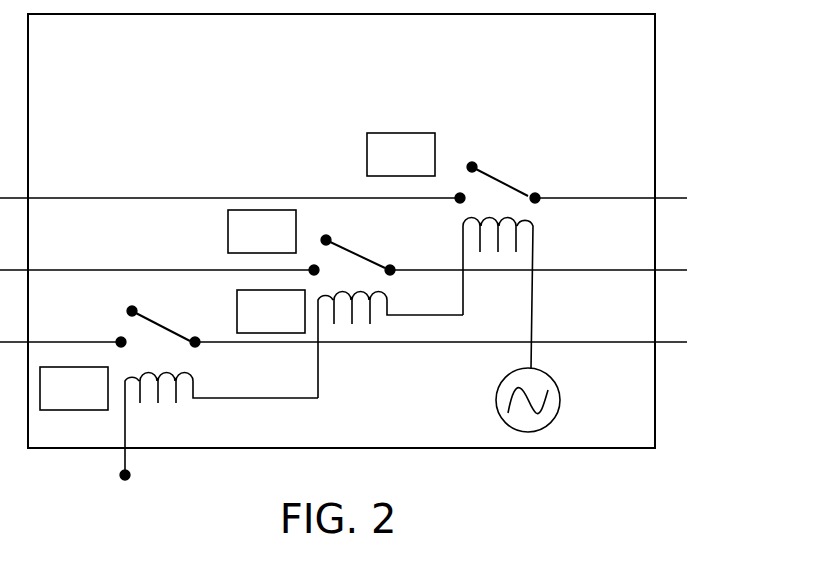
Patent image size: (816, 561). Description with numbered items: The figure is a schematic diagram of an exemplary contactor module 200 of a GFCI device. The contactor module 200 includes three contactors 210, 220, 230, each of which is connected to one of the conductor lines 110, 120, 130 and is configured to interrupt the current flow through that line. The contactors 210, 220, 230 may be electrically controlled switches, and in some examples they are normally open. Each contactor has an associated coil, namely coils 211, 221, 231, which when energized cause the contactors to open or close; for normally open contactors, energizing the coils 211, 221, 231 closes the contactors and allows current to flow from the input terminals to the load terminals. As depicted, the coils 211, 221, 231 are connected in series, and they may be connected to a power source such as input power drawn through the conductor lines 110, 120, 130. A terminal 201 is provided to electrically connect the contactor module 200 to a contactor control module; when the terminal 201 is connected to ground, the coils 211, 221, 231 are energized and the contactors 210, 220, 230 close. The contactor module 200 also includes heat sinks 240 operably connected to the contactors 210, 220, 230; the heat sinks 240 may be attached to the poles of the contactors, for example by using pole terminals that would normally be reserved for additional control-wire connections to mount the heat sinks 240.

The contactor module 200 is at (341, 231).
The conductor line 110 is at (58, 200).
The conductor line 120 is at (58, 270).
The conductor line 130 is at (580, 344).
The contactor 210 is at (507, 185).
The coil 211 is at (551, 228).
The contactor 220 is at (358, 258).
The coil 221 is at (357, 333).
The contactor 230 is at (172, 333).
The coil 231 is at (168, 408).
The terminal 201 is at (125, 478).
The heat sink 240 is at (237, 271).